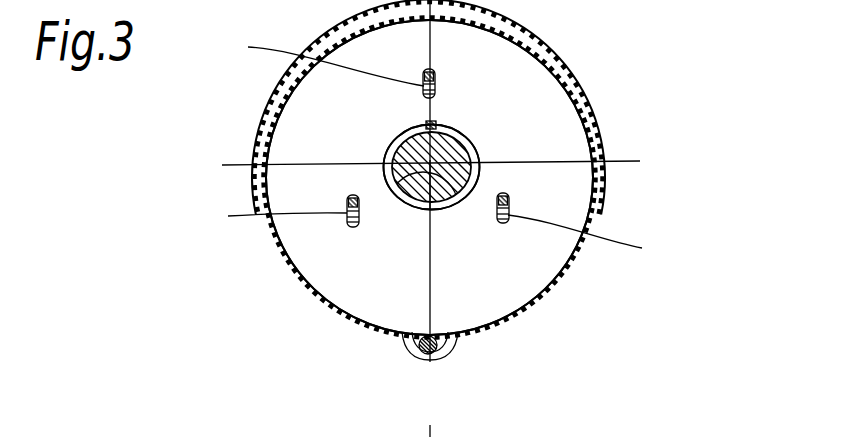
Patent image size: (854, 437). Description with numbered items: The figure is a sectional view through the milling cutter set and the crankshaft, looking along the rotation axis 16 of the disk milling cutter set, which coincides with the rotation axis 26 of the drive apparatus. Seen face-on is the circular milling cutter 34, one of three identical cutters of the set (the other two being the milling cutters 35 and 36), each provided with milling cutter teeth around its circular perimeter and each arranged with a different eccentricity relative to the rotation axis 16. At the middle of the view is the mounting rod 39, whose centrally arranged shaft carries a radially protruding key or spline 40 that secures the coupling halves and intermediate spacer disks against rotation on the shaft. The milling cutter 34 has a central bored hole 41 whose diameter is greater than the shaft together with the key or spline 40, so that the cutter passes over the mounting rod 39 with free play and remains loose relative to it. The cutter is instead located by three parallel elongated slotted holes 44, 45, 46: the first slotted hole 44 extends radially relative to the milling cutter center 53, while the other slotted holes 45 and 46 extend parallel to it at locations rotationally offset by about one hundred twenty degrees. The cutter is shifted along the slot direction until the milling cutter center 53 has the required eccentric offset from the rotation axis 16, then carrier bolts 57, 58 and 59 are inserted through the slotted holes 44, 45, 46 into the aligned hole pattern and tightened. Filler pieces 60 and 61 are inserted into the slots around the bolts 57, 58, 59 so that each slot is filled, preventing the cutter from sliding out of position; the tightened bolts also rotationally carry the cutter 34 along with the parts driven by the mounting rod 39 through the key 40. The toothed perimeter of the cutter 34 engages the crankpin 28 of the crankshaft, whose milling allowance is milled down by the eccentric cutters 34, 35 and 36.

The rotation axis 16 is at (571, 166).
The rotation axis 26 is at (440, 150).
The crankpin 28 is at (447, 342).
The circular milling cutter 34 is at (310, 270).
The circular milling cutter 35 is at (260, 122).
The circular milling cutter 36 is at (568, 60).
The mounting rod 39 is at (440, 160).
The key or spline 40 is at (426, 122).
The central bored hole 41 is at (419, 204).
The elongated slotted hole 44 is at (318, 56).
The elongated slotted hole 45 is at (268, 218).
The elongated slotted hole 46 is at (595, 241).
The milling cutter center 53 is at (412, 200).
The carrier bolt 57 is at (427, 72).
The carrier bolt 58 is at (349, 205).
The carrier bolt 59 is at (498, 210).
The filler piece 60 is at (437, 93).
The filler piece 61 is at (437, 70).